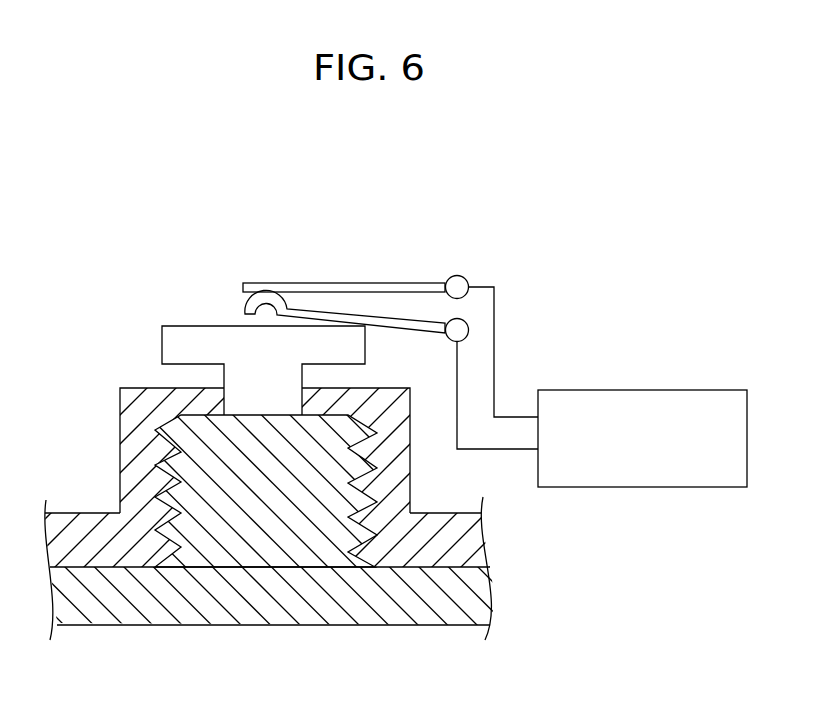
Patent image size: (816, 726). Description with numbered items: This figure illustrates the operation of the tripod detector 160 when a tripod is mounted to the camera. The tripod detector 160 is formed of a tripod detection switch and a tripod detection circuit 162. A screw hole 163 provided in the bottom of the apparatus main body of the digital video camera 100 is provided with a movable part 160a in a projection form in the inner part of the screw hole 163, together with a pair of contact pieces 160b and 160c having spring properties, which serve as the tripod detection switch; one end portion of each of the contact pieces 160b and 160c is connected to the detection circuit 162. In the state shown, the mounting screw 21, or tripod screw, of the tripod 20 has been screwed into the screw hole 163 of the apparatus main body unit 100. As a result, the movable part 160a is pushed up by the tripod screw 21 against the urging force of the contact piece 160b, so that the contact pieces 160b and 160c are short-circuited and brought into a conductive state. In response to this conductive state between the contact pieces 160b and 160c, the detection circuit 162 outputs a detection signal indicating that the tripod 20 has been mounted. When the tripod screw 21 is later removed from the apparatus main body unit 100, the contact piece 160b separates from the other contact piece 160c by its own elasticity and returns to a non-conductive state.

The tripod detector 160 is at (315, 273).
The movable part 160a is at (191, 342).
The contact piece 160b is at (248, 300).
The contact piece 160c is at (384, 283).
The tripod detection circuit 162 is at (652, 390).
The screw hole 163 is at (120, 441).
The digital video camera 100 is at (450, 541).
The tripod 20 is at (285, 617).
The mounting screw 21 is at (278, 626).